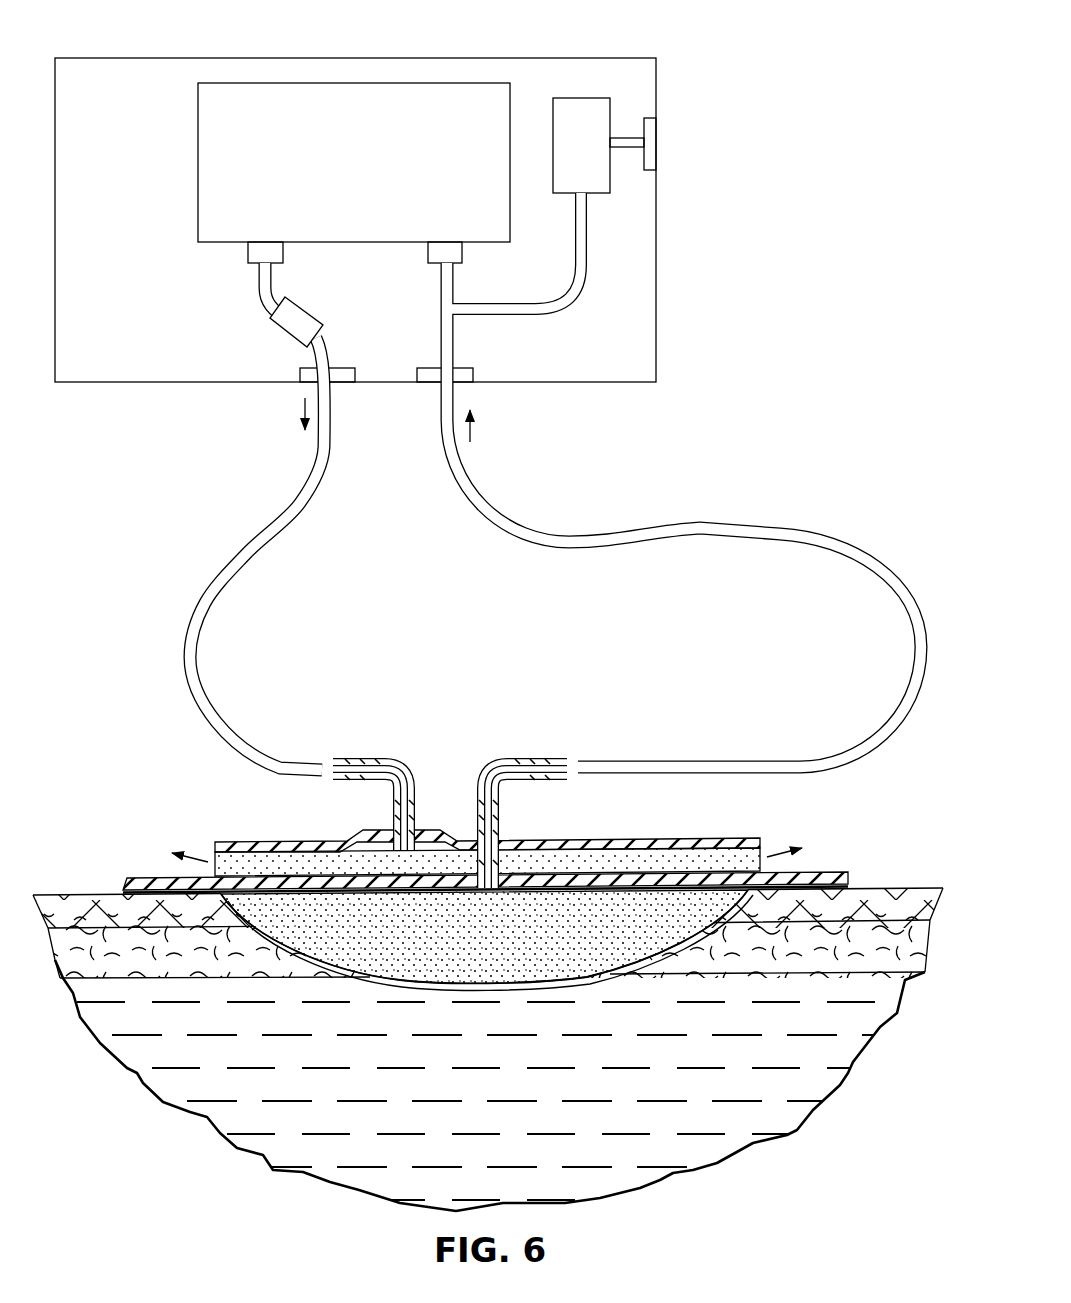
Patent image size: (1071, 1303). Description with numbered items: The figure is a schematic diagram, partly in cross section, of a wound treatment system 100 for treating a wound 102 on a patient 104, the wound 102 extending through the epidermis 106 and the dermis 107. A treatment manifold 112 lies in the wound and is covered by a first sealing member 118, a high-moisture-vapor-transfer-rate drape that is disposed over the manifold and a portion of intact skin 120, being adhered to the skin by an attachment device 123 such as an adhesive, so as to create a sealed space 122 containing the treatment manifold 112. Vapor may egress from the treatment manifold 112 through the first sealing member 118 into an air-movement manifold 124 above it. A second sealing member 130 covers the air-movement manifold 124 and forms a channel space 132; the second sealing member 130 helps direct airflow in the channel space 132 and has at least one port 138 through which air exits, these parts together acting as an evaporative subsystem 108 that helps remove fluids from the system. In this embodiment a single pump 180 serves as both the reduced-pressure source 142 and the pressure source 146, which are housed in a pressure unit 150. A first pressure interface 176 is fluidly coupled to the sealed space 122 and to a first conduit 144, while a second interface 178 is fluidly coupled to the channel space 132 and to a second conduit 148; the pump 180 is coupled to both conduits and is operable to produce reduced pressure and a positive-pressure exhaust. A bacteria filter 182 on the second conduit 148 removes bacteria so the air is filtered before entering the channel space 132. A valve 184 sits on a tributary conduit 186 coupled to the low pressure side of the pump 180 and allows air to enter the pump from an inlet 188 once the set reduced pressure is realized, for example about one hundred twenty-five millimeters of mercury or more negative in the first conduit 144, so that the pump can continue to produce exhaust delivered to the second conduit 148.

The wound treatment system 100 is at (160, 747).
The wound 102 is at (600, 987).
The patient 104 is at (855, 1068).
The epidermis 106 is at (60, 894).
The dermis 107 is at (935, 960).
The evaporative subsystem 108 is at (717, 838).
The treatment manifold 112 is at (466, 946).
The first sealing member 118 is at (824, 872).
The intact skin 120 is at (97, 894).
The sealed space 122 is at (758, 893).
The attachment device 123 is at (850, 884).
The air-movement manifold 124 is at (655, 860).
The second sealing member 130 is at (244, 842).
The channel space 132 is at (296, 858).
The port 138 is at (210, 848).
The reduced-pressure source 142 is at (428, 256).
The first conduit 144 is at (465, 477).
The pressure source 146 is at (248, 256).
The second conduit 148 is at (306, 482).
The pressure unit 150 is at (146, 57).
The first pressure interface 176 is at (530, 757).
The second interface 178 is at (360, 757).
The pump 180 is at (198, 162).
The bacteria filter 182 is at (285, 336).
The valve 184 is at (598, 195).
The tributary conduit 186 is at (495, 318).
The inlet 188 is at (644, 126).